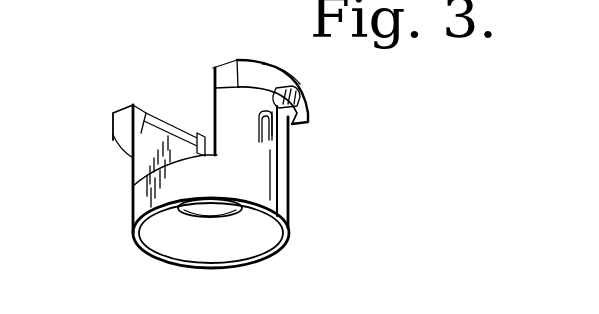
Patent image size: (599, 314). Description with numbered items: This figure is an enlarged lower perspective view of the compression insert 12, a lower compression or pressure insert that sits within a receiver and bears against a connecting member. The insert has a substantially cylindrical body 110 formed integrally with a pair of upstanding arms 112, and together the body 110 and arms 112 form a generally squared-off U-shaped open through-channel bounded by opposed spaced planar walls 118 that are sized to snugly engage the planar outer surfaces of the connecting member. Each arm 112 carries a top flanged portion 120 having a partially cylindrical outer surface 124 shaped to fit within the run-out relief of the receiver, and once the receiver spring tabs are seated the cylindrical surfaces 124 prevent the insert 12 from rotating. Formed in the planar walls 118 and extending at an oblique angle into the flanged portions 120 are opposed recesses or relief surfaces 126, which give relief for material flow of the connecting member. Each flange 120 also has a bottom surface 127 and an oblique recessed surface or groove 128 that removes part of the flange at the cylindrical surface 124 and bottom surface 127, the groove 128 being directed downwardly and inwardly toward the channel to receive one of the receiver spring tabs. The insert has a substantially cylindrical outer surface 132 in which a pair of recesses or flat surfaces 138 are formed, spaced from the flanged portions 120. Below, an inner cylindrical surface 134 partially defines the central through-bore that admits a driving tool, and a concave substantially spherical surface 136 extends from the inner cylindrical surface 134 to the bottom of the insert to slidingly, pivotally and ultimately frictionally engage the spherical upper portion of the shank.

The compression insert 12 is at (289, 177).
The cylindrical body 110 is at (138, 207).
The upstanding arms 112 is at (137, 168).
The planar walls 118 is at (148, 126).
The top flanged portion 120 is at (253, 64).
The partially cylindrical outer surface 124 is at (300, 84).
The recesses or relief surfaces 126 is at (173, 136).
The bottom surface 127 is at (236, 89).
The recessed surface or groove 128 is at (299, 106).
The cylindrical outer surface 132 is at (265, 178).
The inner cylindrical surface 134 is at (203, 199).
The concave spherical surface 136 is at (257, 252).
The recesses or flat surfaces 138 is at (292, 128).